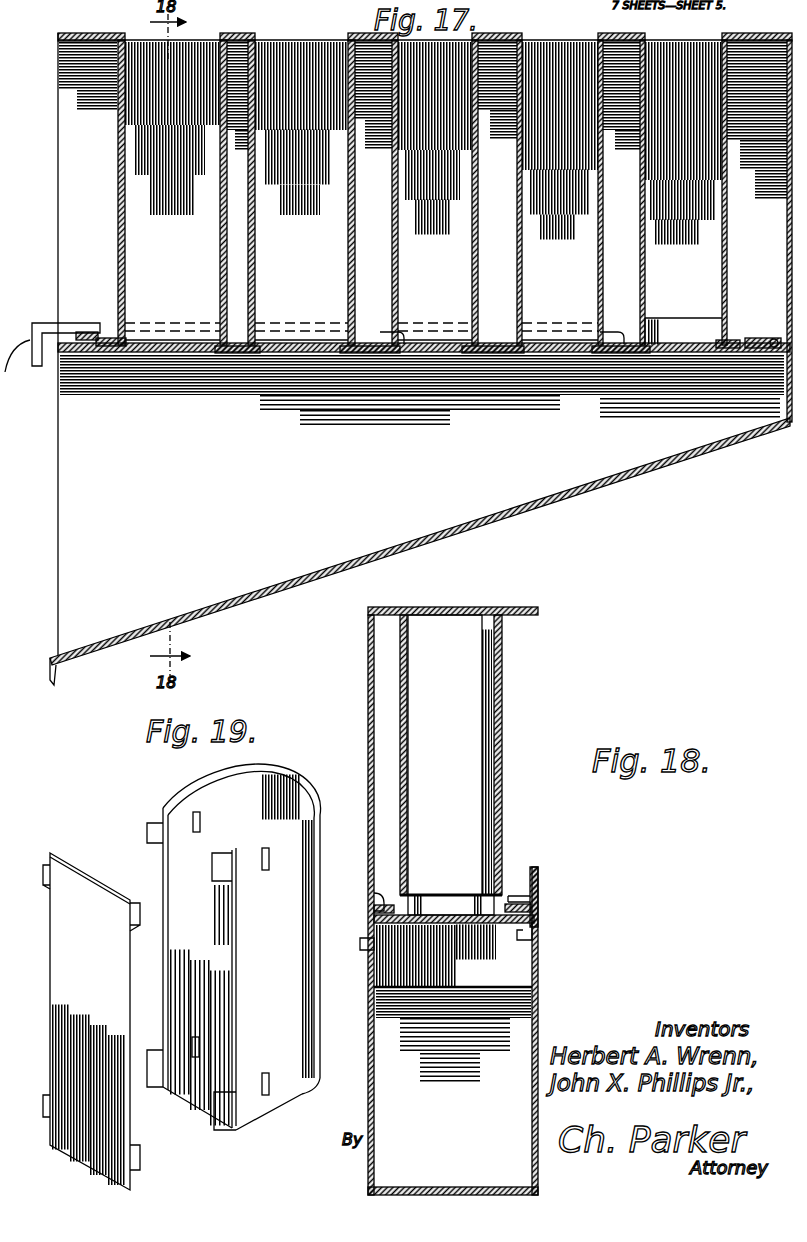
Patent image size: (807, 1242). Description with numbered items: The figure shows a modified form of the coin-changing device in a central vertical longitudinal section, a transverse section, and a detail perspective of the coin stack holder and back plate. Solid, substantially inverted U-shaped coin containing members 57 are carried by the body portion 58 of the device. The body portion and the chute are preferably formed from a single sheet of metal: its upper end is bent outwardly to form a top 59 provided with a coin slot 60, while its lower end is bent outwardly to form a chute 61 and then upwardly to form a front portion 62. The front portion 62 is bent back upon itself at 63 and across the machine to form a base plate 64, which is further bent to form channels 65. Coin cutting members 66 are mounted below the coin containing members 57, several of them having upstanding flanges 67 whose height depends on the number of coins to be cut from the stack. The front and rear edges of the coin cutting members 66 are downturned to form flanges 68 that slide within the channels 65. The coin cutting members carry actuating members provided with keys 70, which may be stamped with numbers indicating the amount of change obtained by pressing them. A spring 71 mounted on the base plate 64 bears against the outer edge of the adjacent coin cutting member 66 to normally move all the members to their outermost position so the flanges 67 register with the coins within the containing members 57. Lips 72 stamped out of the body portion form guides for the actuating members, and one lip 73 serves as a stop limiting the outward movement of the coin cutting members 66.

In FIG. 17, the coin containing member 57 is at (118, 217).
In FIG. 18, the coin containing member 57 is at (503, 708).
In FIG. 19, the coin containing member 57 is at (229, 806).
In FIG. 17, the body portion 58 is at (425, 344).
In FIG. 18, the body portion 58 is at (368, 700).
In FIG. 17, the top 59 is at (236, 40).
In FIG. 18, the top 59 is at (510, 607).
In FIG. 17, the coin slot 60 is at (140, 40).
In FIG. 18, the coin slot 60 is at (450, 607).
In FIG. 17, the chute 61 is at (277, 585).
In FIG. 18, the chute 61 is at (446, 1186).
In FIG. 18, the front portion 62 is at (540, 982).
In FIG. 18, the bend 63 is at (538, 868).
In FIG. 17, the base plate 64 is at (636, 353).
In FIG. 18, the base plate 64 is at (504, 925).
In FIG. 18, the channel 65 is at (368, 958).
In FIG. 17, the coin cutting member 66 is at (312, 342).
In FIG. 18, the coin cutting member 66 is at (456, 893).
In FIG. 17, the upstanding flange 67 is at (172, 342).
In FIG. 18, the upstanding flange 67 is at (420, 895).
In FIG. 18, the flange 68 is at (376, 908).
In FIG. 17, the key 70 is at (22, 360).
In FIG. 17, the spring 71 is at (762, 342).
In FIG. 17, the lip 72 is at (92, 320).
In FIG. 18, the lip 72 is at (374, 893).
In FIG. 17, the stop lip 73 is at (104, 332).